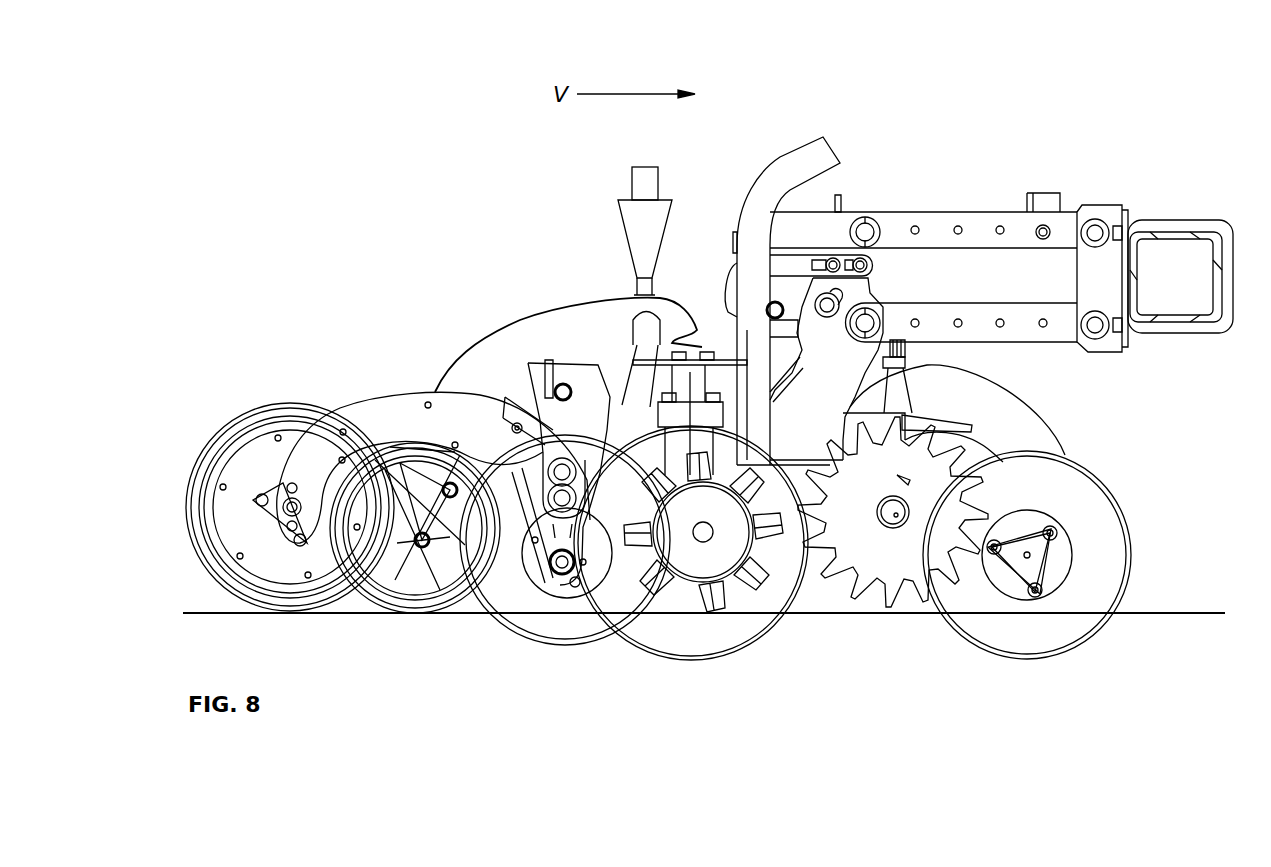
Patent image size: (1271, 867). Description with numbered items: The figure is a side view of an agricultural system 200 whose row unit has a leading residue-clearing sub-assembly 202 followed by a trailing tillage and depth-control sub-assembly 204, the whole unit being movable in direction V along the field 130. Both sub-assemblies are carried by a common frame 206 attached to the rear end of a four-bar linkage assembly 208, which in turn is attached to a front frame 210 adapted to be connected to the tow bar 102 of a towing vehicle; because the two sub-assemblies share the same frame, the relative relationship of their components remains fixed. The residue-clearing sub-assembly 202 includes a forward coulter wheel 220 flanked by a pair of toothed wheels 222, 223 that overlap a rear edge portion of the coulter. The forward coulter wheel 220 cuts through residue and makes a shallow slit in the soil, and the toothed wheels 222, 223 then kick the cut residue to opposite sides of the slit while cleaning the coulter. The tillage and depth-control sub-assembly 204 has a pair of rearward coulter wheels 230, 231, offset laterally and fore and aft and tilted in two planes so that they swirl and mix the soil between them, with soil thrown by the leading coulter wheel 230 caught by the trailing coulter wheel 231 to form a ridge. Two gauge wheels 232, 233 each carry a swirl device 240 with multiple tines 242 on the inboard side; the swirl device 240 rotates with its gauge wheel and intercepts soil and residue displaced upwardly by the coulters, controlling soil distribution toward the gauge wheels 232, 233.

The agricultural system 200 is at (1125, 77).
The tow bar 102 is at (1190, 238).
The field 130 is at (1185, 612).
The residue-clearing sub-assembly 202 is at (893, 636).
The tillage and depth-control sub-assembly 204 is at (360, 618).
The common frame 206 is at (628, 440).
The four-bar linkage assembly 208 is at (958, 215).
The front frame 210 is at (1140, 228).
The forward coulter wheel 220 is at (1022, 630).
The toothed wheel 222 is at (835, 600).
The toothed wheel 223 is at (870, 610).
The rearward coulter wheel 230 is at (672, 640).
The rearward coulter wheel 231 is at (545, 630).
The gauge wheel 232 is at (440, 590).
The gauge wheel 233 is at (250, 410).
The swirl device 240 is at (420, 503).
The tines 242 is at (407, 463).